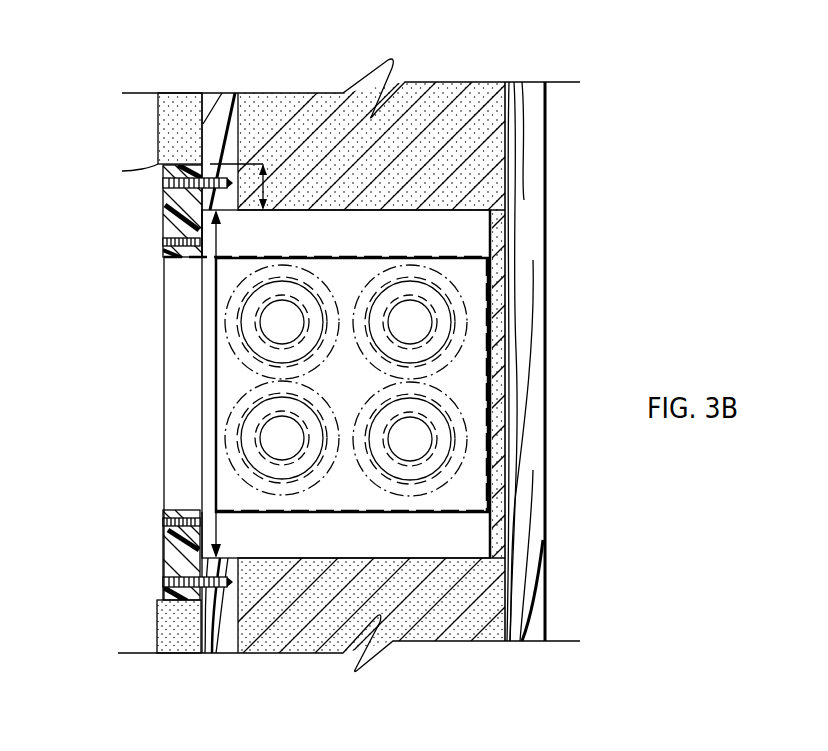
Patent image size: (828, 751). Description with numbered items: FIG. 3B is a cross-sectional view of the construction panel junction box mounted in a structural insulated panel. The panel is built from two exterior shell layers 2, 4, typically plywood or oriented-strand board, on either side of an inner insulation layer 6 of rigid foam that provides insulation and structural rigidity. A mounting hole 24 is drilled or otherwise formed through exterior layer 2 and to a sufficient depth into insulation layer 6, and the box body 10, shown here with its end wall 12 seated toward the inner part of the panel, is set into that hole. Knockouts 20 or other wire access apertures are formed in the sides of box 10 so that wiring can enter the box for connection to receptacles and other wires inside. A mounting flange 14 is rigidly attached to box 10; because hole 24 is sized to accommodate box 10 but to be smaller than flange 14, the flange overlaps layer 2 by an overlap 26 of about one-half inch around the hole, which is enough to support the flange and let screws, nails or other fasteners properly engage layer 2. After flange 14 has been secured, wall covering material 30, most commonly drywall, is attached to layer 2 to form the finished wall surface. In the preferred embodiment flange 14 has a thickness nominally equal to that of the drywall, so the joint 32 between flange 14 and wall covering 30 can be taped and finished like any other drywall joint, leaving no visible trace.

The exterior shell layer 2 is at (250, 103).
The exterior shell layer 4 is at (552, 265).
The inner insulation layer 6 is at (443, 122).
The box body 10 is at (435, 243).
The end wall 12 is at (480, 366).
The mounting flange 14 is at (150, 223).
The knockouts 20 is at (270, 322).
The mounting hole 24 is at (216, 373).
The overlap 26 is at (263, 187).
The wall covering material 30 is at (187, 102).
The joint 32 is at (158, 172).